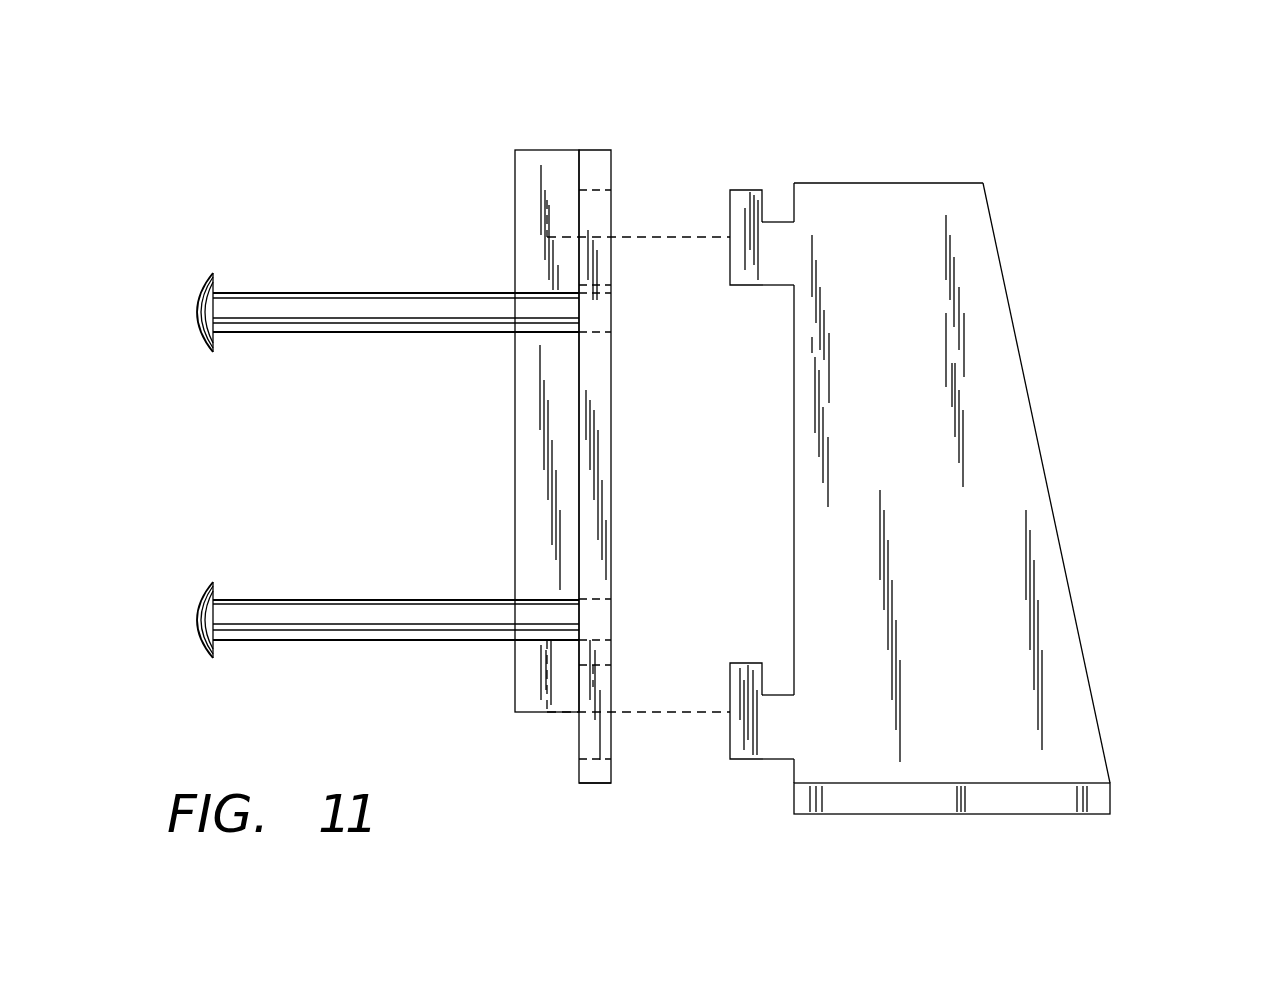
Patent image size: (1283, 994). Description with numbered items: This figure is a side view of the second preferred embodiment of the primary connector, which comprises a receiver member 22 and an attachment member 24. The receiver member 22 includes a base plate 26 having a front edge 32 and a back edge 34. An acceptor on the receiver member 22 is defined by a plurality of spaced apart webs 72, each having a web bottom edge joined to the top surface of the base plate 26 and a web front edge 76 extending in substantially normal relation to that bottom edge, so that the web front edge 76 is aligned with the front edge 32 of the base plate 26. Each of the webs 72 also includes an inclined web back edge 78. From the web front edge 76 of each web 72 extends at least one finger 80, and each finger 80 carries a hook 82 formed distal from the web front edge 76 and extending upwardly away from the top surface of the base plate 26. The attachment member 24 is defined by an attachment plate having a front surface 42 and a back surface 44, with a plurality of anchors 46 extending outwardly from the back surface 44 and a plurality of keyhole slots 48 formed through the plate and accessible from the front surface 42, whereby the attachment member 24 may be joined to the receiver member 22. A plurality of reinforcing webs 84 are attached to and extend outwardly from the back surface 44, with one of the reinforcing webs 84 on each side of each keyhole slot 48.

The receiver member 22 is at (1044, 130).
The attachment member 24 is at (445, 151).
The base plate 26 is at (975, 800).
The front edge 32 is at (793, 800).
The back edge 34 is at (1110, 797).
The front surface 42 is at (611, 372).
The back surface 44 is at (578, 771).
The anchors 46 is at (290, 300).
The keyhole slots 48 is at (593, 690).
The webs 72 is at (938, 410).
The web front edge 76 is at (794, 515).
The inclined web back edge 78 is at (1033, 428).
The finger 80 is at (755, 253).
The hook 82 is at (740, 190).
The reinforcing webs 84 is at (530, 258).